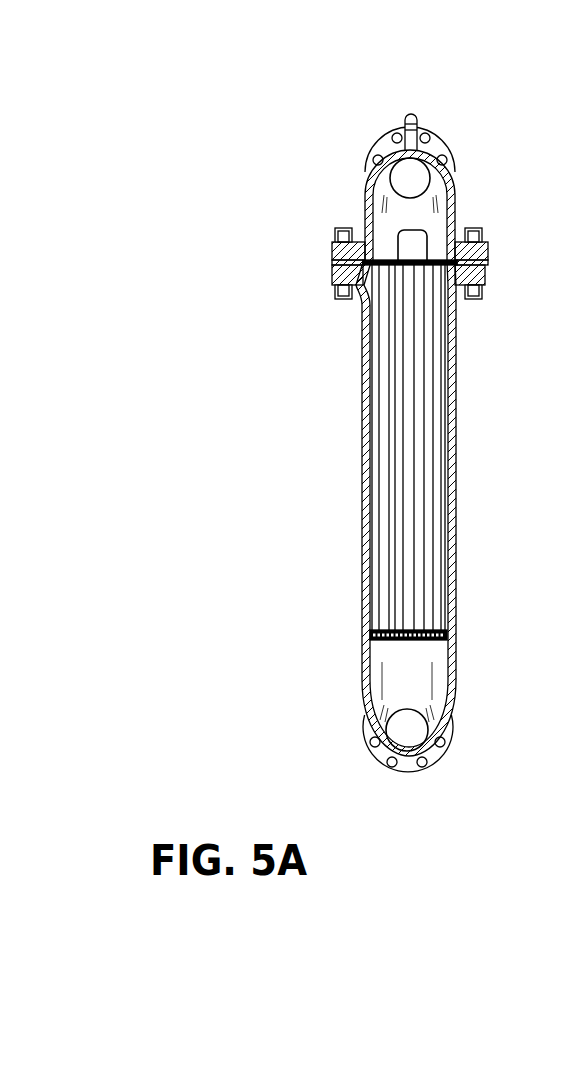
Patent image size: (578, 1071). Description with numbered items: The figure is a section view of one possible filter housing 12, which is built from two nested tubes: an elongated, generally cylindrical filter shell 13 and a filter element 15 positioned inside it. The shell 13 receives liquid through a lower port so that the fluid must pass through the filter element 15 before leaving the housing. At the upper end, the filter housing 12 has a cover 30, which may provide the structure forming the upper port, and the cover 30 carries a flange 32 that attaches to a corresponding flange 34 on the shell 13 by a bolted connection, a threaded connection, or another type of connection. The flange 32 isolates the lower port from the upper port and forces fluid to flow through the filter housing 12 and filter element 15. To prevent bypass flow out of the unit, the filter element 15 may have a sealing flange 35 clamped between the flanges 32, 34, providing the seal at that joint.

The filter housing 12 is at (377, 443).
The filter shell 13 is at (453, 495).
The filter element 15 is at (413, 595).
The cover 30 is at (458, 217).
The flange 32 is at (493, 250).
The flange 34 is at (483, 275).
The sealing flange 35 is at (335, 263).